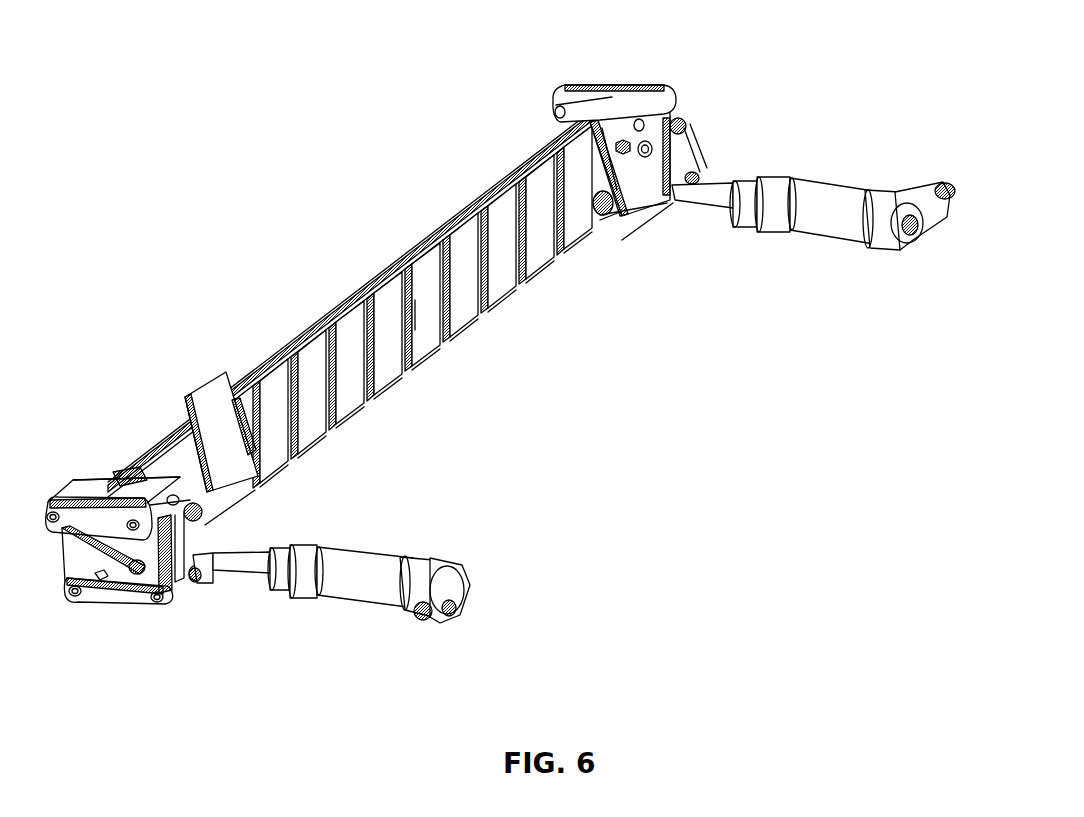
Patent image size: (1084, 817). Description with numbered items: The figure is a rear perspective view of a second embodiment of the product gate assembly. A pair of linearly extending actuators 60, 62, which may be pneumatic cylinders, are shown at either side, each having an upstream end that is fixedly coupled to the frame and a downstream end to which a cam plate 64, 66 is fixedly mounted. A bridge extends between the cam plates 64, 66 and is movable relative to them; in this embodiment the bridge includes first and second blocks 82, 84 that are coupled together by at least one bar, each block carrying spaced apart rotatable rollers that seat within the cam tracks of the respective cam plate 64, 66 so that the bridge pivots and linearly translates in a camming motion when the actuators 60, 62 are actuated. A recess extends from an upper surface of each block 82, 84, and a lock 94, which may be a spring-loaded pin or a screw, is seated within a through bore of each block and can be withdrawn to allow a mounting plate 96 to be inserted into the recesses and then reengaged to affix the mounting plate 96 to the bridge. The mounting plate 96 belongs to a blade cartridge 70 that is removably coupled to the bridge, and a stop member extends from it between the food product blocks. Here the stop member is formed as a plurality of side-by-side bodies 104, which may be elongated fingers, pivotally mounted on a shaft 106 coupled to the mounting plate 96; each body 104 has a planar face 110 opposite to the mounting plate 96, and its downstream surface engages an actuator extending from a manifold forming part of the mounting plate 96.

The actuator 60 is at (843, 207).
The actuator 62 is at (367, 577).
The cam plate 64 is at (597, 97).
The cam plate 66 is at (82, 487).
The blade cartridge 70 is at (450, 203).
The first block 82 is at (116, 588).
The second block 84 is at (120, 470).
The lock 94 is at (225, 512).
The mounting plate 96 is at (180, 437).
The bodies 104 is at (547, 183).
The shaft 106 is at (615, 215).
The planar face 110 is at (433, 307).